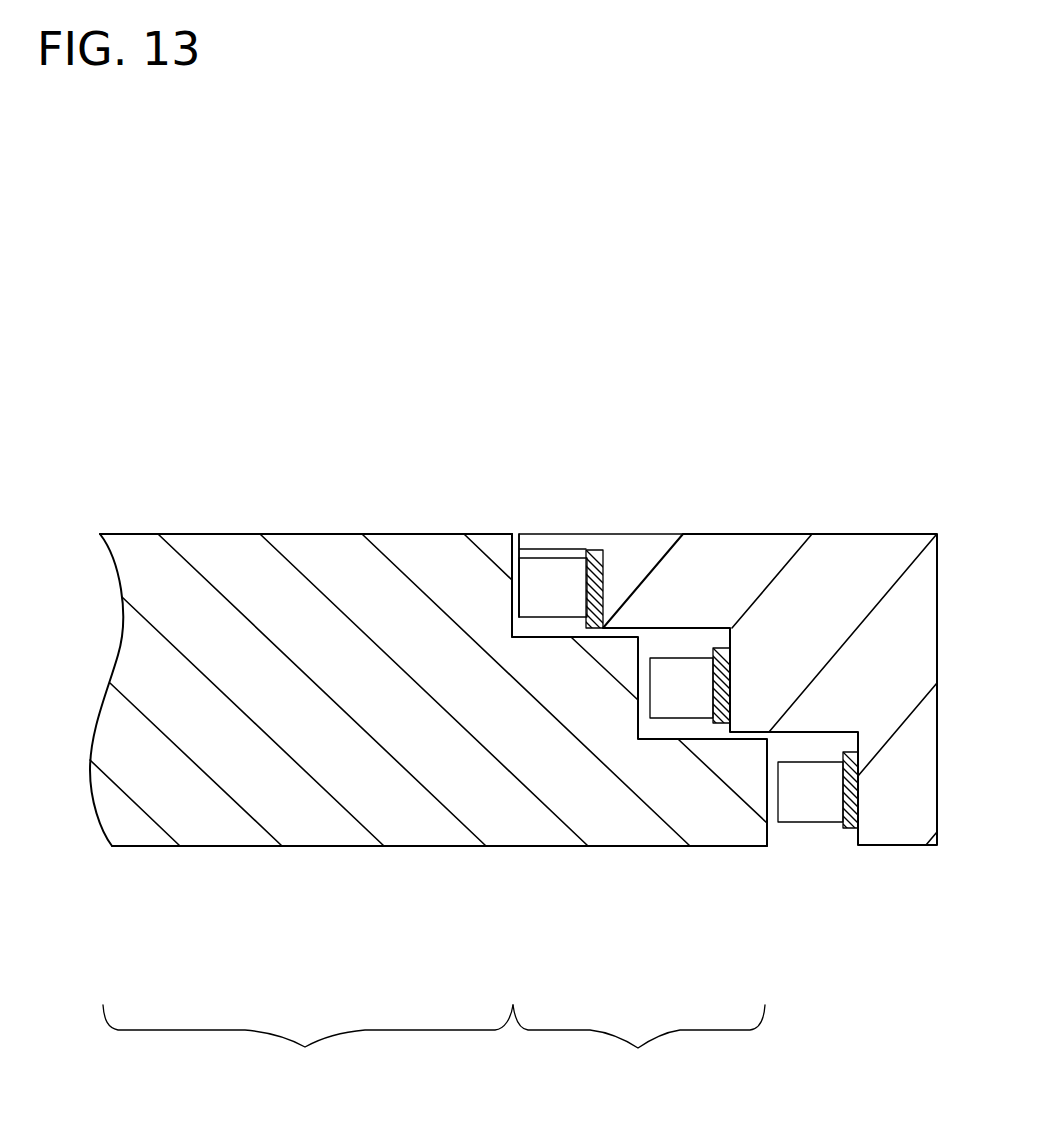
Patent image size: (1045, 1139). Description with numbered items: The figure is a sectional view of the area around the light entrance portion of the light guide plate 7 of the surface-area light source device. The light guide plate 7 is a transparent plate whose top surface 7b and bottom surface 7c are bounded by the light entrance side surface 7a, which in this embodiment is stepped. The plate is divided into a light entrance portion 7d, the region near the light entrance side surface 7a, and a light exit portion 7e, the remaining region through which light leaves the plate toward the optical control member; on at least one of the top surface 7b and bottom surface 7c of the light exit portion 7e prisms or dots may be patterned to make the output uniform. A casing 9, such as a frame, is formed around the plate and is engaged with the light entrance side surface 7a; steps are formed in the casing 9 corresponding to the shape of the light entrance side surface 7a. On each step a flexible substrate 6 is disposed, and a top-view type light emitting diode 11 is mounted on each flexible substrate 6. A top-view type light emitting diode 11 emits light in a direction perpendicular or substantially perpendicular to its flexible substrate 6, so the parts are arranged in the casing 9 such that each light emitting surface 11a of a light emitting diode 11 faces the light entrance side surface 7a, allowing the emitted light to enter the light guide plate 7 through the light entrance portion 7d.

The light guide plate 7 is at (415, 817).
The light entrance side surface 7a is at (516, 592).
The top surface 7b is at (182, 534).
The bottom surface 7c is at (262, 847).
The light entrance portion 7d is at (639, 1049).
The light exit portion 7e is at (308, 1049).
The casing 9 is at (823, 534).
The light emitting diode 11 is at (556, 557).
The light emitting surface 11a is at (516, 601).
The flexible substrate 6 is at (603, 600).